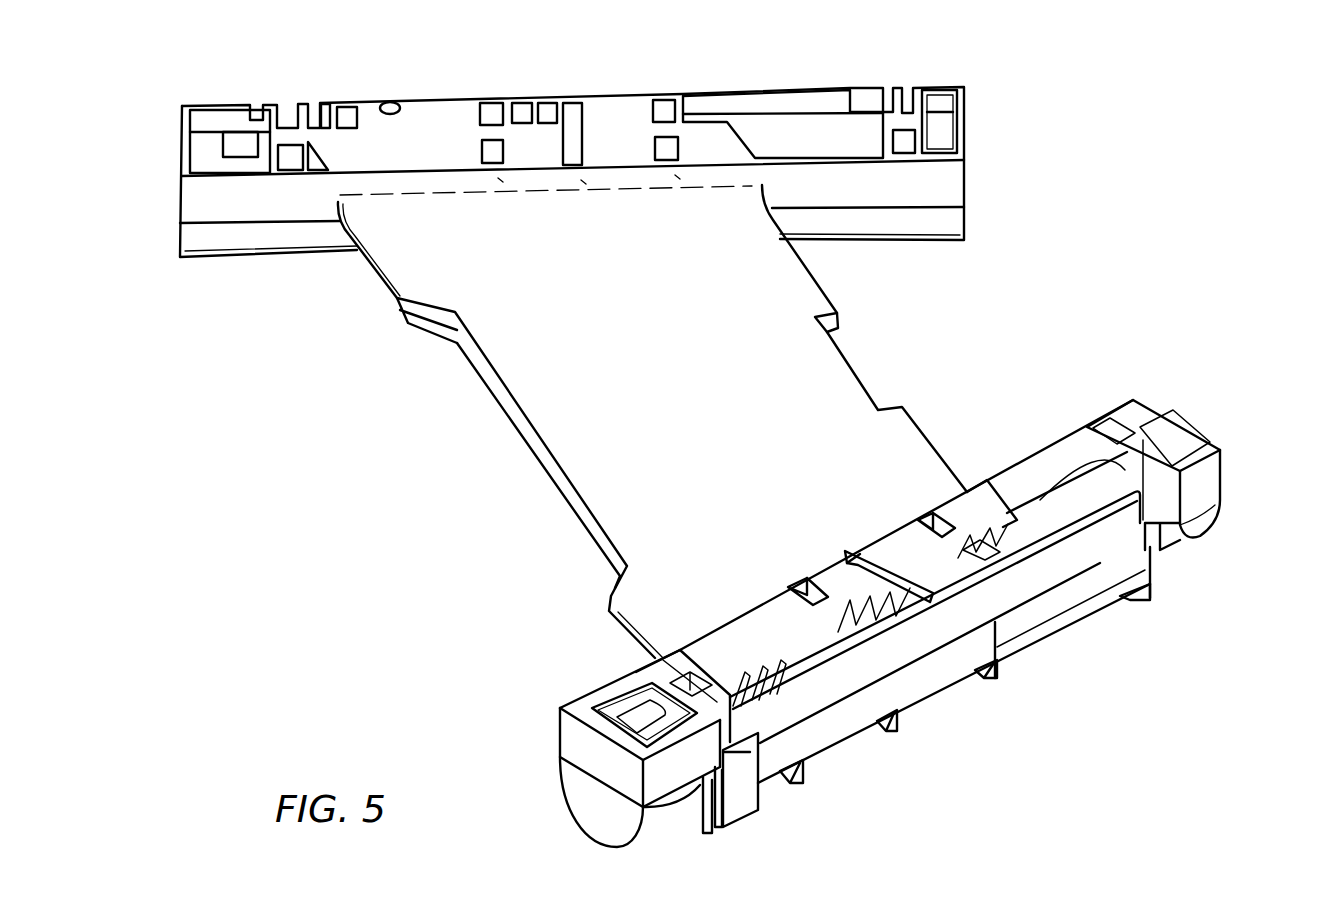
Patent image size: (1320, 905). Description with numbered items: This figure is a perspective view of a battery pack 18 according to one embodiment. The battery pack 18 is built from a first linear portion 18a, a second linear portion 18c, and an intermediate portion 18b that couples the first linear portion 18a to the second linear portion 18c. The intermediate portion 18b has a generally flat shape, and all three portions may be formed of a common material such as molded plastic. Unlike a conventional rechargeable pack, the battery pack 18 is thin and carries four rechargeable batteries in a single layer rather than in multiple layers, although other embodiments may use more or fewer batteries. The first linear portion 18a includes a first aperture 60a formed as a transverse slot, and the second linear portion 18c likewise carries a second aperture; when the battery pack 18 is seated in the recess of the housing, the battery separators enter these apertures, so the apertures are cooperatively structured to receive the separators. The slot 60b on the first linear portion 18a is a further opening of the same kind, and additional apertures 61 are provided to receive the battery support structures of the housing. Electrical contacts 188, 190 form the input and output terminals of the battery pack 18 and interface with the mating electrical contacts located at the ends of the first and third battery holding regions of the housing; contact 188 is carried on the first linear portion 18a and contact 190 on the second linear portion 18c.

The battery pack 18 is at (729, 452).
The first linear portion 18a is at (1223, 475).
The intermediate portion 18b is at (850, 363).
The second linear portion 18c is at (967, 187).
The first aperture 60a is at (585, 183).
The connector slot 60b is at (841, 543).
The additional apertures 61 is at (678, 177).
The electrical contact 188 is at (628, 722).
The electrical contact 190 is at (233, 150).